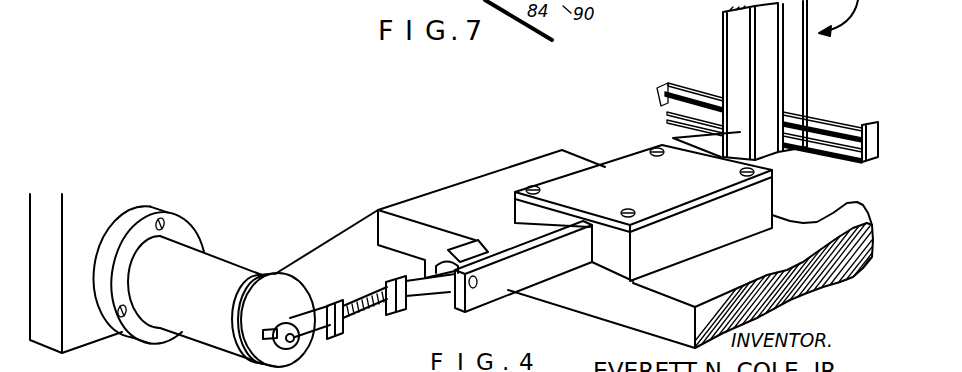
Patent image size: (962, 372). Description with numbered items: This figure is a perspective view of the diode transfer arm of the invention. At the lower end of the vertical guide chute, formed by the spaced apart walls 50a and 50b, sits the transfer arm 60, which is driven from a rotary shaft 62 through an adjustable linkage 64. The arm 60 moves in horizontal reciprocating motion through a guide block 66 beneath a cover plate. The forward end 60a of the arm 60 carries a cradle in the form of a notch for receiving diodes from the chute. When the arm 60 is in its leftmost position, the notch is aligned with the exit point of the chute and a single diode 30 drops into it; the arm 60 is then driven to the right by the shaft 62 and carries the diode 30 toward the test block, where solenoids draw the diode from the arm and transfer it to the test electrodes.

The diode 30 is at (657, 88).
The wall of vertical chute 50a is at (737, 63).
The wall of vertical chute 50b is at (797, 80).
The transfer arm 60 is at (507, 274).
The forward end of arm 60a is at (787, 163).
The rotary shaft 62 is at (292, 293).
The adjustable linkage 64 is at (371, 313).
The guide block 66 is at (715, 237).